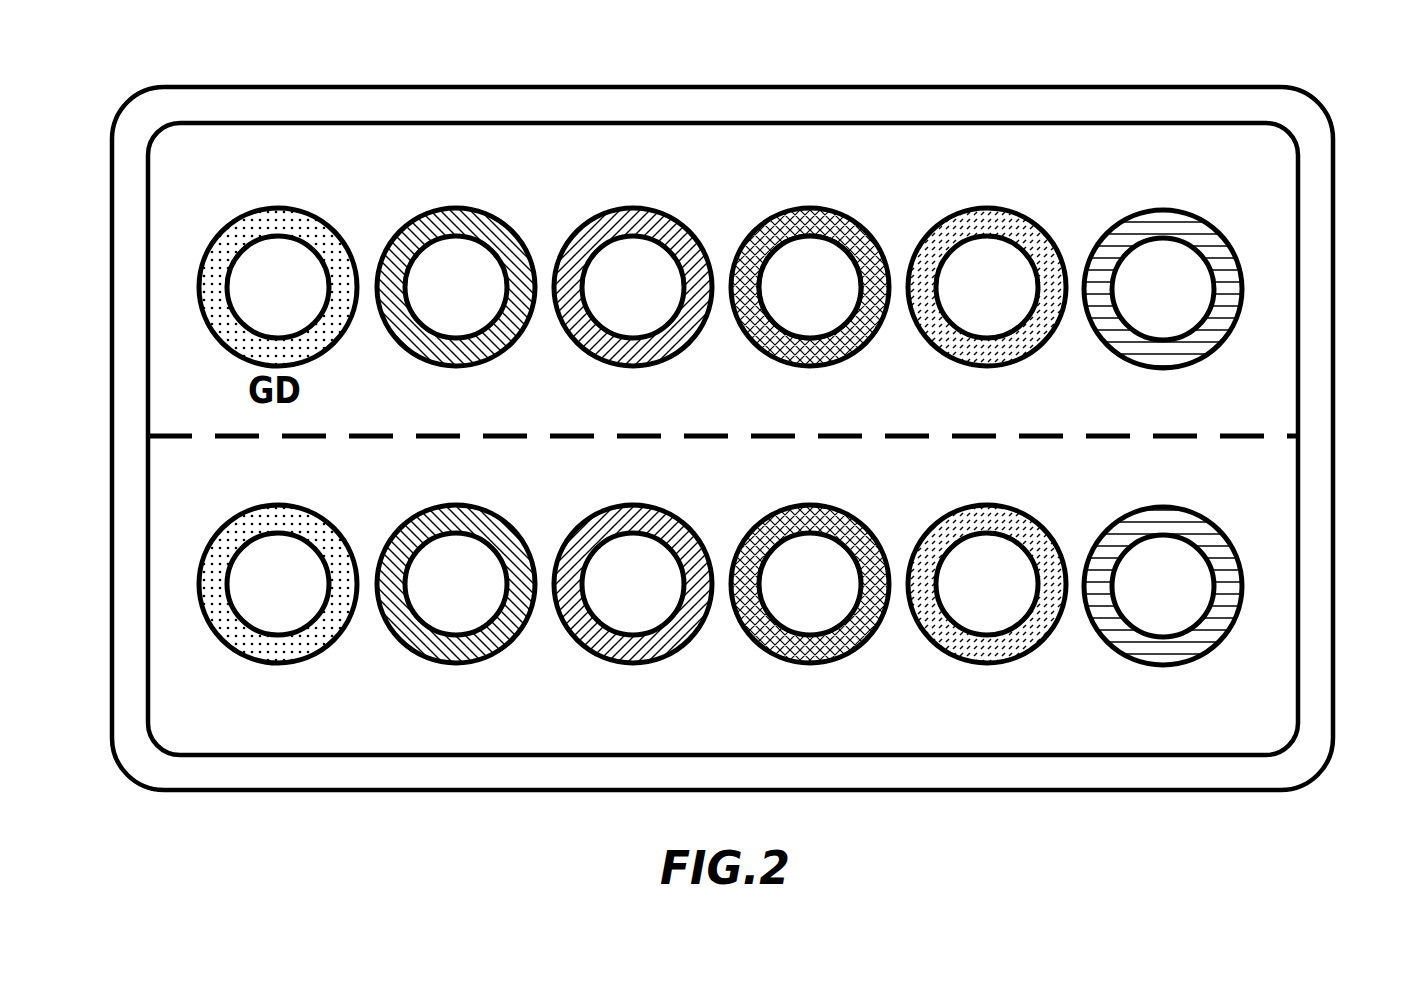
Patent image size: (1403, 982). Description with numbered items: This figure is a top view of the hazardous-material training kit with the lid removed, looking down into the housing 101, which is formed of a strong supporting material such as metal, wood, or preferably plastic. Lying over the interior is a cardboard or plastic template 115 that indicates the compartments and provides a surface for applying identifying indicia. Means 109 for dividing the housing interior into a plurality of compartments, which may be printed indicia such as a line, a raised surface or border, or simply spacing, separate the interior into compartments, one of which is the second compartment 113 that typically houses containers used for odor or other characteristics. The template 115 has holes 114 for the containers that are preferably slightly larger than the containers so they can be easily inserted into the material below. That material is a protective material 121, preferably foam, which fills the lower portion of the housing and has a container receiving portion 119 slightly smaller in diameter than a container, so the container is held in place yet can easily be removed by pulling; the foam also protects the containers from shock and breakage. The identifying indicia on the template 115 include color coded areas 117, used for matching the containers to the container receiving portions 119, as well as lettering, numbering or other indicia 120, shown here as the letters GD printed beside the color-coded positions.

The housing 101 is at (523, 87).
The means for dividing the housing interior 109 is at (1245, 434).
The second compartment 113 is at (1211, 177).
The holes 114 is at (995, 240).
The template 115 is at (207, 188).
The color coded areas 117 is at (200, 600).
The container receiving portion 119 is at (797, 258).
The lettering, numbering or other indicia 120 is at (310, 685).
The protective material 121 is at (822, 263).